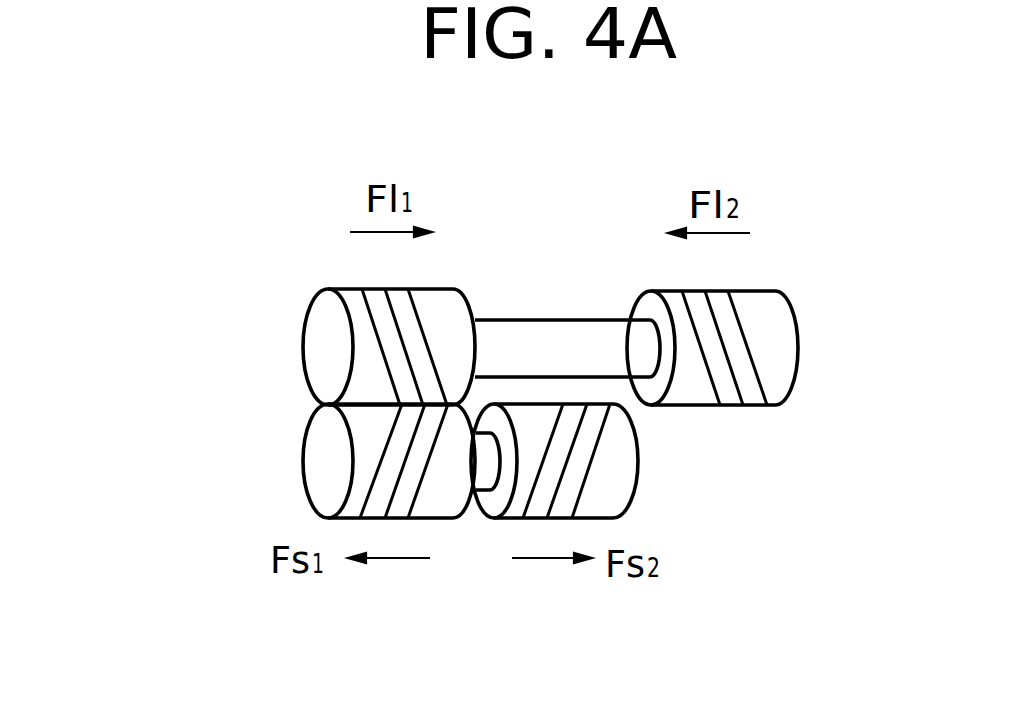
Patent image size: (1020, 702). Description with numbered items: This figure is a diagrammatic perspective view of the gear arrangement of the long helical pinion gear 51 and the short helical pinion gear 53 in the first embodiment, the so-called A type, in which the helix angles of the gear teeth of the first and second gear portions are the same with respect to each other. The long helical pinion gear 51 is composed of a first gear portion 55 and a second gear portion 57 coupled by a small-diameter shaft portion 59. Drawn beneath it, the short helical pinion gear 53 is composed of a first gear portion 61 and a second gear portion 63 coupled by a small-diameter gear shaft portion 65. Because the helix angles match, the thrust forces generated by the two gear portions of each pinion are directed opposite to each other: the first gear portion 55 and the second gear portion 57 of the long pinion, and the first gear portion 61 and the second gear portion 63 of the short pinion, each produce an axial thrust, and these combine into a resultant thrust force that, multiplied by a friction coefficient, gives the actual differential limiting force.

The long helical pinion gear 51 is at (196, 345).
The short helical pinion gear 53 is at (196, 462).
The first gear portion 55 is at (343, 288).
The second gear portion 57 is at (663, 290).
The small-diameter shaft portion 59 is at (547, 330).
The first gear portion 61 is at (310, 480).
The second gear portion 63 is at (636, 483).
The small-diameter gear shaft portion 65 is at (483, 470).